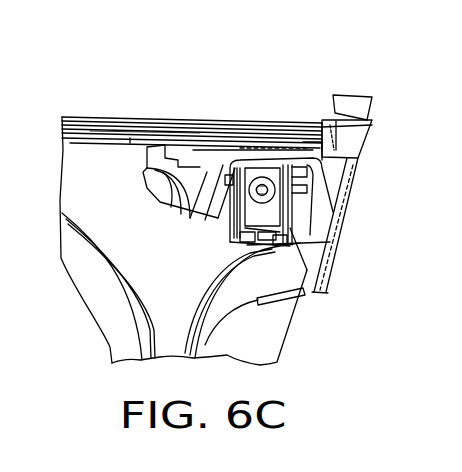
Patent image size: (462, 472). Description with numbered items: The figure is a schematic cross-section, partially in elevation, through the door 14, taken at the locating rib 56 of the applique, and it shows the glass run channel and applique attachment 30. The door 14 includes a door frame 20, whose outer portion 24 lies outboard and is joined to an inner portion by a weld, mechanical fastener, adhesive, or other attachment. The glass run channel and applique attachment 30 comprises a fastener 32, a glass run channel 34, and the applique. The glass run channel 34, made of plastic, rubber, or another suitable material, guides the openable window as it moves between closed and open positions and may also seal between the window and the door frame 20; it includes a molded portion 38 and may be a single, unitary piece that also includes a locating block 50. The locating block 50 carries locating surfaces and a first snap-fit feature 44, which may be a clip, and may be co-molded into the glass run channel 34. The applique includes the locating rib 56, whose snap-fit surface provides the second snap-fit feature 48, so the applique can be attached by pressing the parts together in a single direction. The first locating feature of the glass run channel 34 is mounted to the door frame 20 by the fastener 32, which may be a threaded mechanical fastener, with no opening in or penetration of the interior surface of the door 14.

The door 14 is at (177, 100).
The door frame 20 is at (110, 117).
The outer portion 24 is at (177, 300).
The glass run channel and applique attachment 30 is at (286, 113).
The fastener 32 is at (273, 198).
The glass run channel 34 is at (157, 193).
The molded portion 38 is at (195, 165).
The first snap-fit feature 44 is at (262, 248).
The second snap-fit feature 48 is at (278, 243).
The locating block 50 is at (330, 227).
The locating rib 56 is at (322, 266).